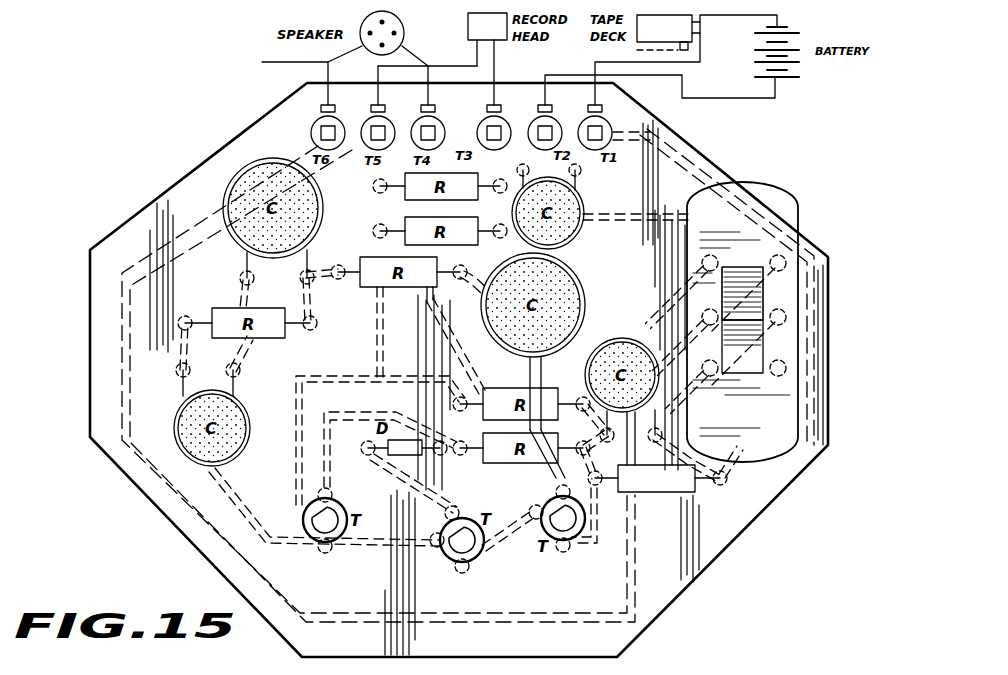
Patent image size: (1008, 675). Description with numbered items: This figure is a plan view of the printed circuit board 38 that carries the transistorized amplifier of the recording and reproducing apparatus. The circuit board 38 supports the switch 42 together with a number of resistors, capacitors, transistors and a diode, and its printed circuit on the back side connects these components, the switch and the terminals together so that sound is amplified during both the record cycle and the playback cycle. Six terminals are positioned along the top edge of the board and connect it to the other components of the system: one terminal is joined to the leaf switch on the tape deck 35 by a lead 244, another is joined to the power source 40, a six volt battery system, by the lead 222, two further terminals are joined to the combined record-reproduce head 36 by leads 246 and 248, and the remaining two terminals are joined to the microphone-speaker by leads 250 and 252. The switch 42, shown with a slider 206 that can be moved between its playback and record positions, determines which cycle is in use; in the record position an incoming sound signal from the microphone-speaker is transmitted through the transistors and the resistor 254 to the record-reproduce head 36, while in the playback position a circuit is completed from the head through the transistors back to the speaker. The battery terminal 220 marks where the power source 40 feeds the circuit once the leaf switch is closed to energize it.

The tape deck 35 is at (678, 30).
The record-reproduce head 36 is at (468, 20).
The circuit board 38 is at (748, 498).
The power source 40 is at (800, 69).
The switch mechanism 42 is at (790, 395).
The switch slider 206 is at (760, 290).
The battery lead 220 is at (782, 15).
The lead 222 is at (757, 99).
The lead 244 is at (606, 96).
The lead 246 is at (495, 72).
The lead 248 is at (477, 67).
The lead 250 is at (447, 53).
The lead 252 is at (284, 75).
The resistor 254 is at (678, 493).